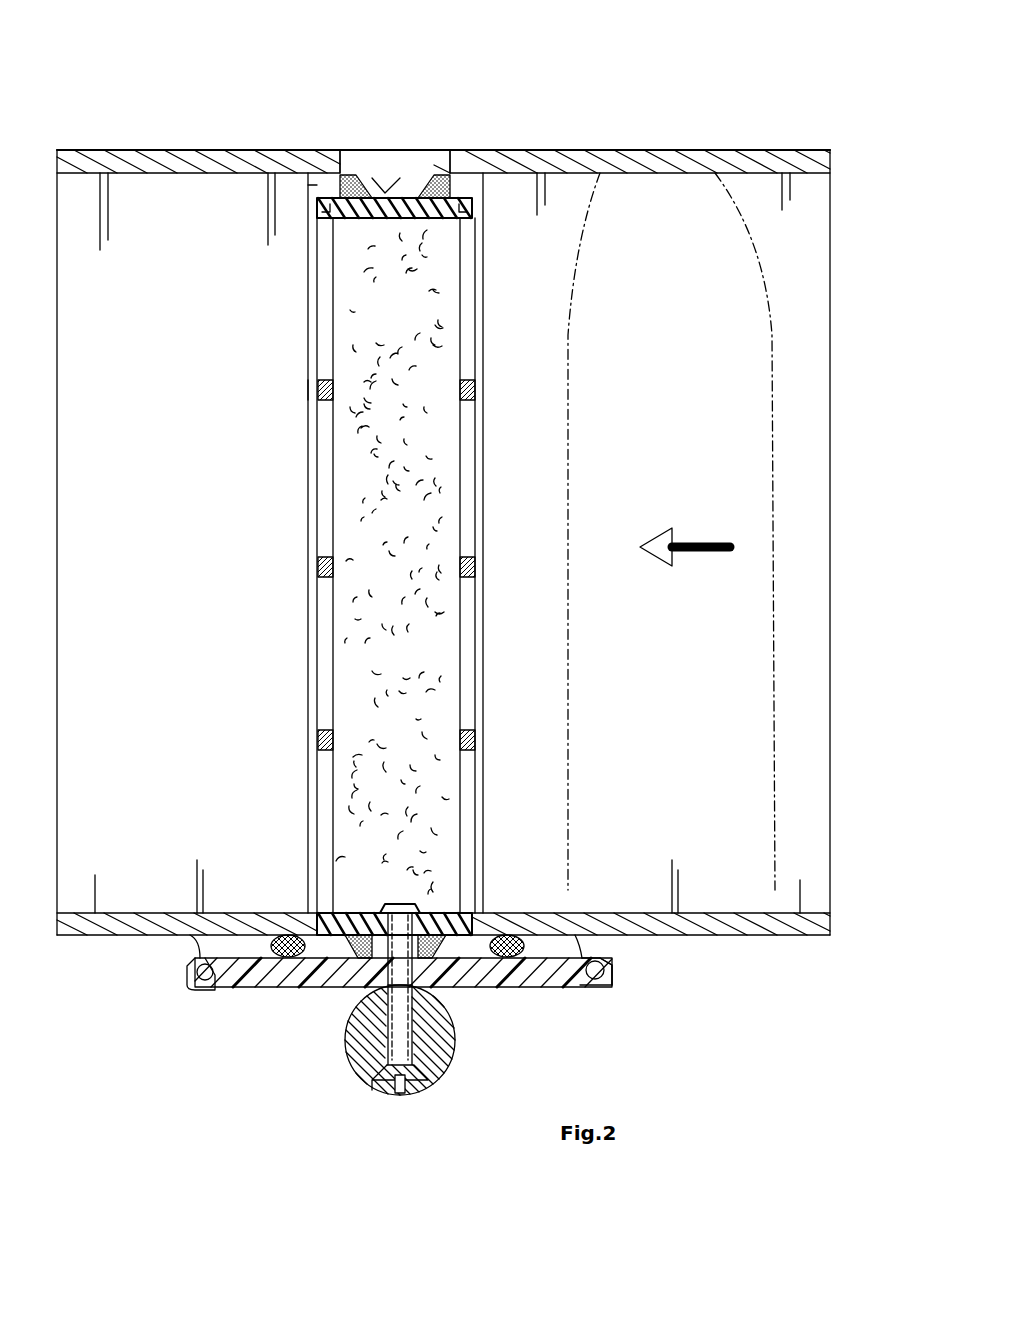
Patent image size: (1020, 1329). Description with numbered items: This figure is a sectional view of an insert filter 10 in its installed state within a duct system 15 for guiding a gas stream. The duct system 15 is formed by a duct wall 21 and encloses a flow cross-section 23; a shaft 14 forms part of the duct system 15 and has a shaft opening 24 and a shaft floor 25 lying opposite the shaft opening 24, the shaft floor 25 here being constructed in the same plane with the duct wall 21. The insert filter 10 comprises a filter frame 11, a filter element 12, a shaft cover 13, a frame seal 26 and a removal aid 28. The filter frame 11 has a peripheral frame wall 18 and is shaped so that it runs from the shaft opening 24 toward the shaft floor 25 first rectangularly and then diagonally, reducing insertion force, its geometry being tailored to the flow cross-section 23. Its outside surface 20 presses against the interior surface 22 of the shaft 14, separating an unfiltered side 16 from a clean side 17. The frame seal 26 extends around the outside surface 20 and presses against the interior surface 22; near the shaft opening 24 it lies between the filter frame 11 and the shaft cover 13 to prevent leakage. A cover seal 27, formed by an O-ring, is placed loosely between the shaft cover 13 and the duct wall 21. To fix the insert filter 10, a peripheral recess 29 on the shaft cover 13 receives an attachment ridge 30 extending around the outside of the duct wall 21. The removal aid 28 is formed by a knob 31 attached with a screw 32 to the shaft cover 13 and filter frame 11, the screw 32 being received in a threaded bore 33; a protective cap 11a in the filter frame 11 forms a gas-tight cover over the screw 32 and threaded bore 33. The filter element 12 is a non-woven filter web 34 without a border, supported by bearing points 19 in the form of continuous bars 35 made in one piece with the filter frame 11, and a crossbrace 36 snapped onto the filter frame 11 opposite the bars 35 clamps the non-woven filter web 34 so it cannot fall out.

The insert filter 10 is at (250, 1030).
The filter frame 11 is at (388, 926).
The protective cap 11a is at (400, 904).
The filter element 12 is at (450, 522).
The shaft cover 13 is at (468, 966).
The shaft 14 is at (318, 184).
The duct system 15 is at (490, 112).
The unfiltered side 16 is at (800, 882).
The clean side 17 is at (93, 878).
The frame wall 18 is at (472, 208).
The bearing points 19 is at (305, 385).
The outside surface 20 is at (403, 193).
The duct wall 21 is at (172, 165).
The interior surface 22 is at (380, 178).
The flow cross-section 23 is at (600, 170).
The shaft opening 24 is at (314, 914).
The shaft floor 25 is at (320, 170).
The frame seal 26 is at (352, 188).
The cover seal 27 is at (508, 936).
The removal aid 28 is at (332, 1050).
The peripheral recess 29 is at (605, 968).
The attachment ridge 30 is at (592, 978).
The knob 31 is at (440, 1070).
The screw 32 is at (397, 1092).
The threaded bore 33 is at (384, 905).
The non-woven filter web 34 is at (355, 672).
The bars 35 is at (320, 566).
The crossbrace 36 is at (470, 567).